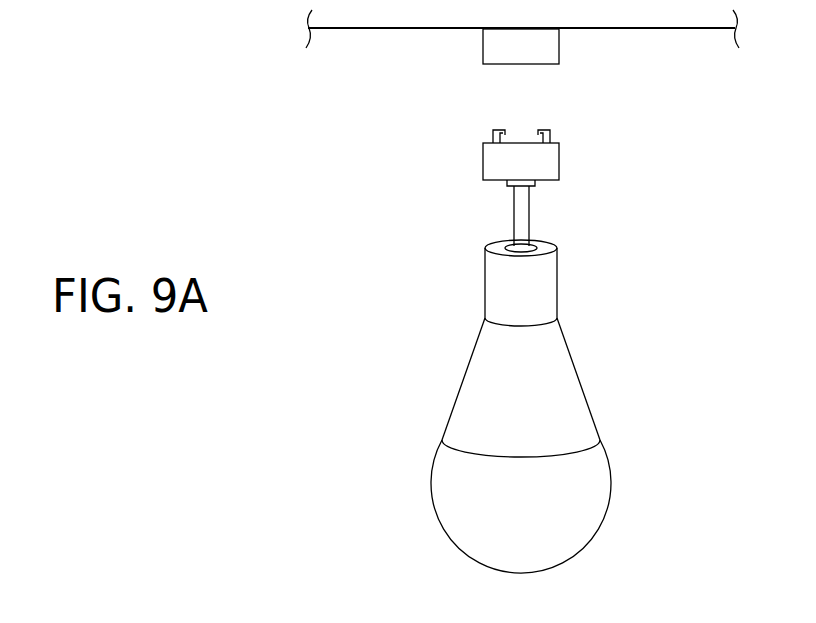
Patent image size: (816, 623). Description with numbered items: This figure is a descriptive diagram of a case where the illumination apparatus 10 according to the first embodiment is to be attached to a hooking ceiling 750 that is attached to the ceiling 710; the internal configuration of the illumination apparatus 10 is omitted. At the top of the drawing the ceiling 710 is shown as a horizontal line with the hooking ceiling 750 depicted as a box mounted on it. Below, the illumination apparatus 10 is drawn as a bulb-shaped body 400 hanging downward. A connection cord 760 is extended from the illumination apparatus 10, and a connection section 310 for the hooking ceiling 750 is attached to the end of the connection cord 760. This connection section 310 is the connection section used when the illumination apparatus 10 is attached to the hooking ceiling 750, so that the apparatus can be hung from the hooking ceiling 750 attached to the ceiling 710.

The illumination apparatus 10 is at (634, 465).
The connection section 310 is at (559, 160).
The lamp 400 is at (439, 521).
The ceiling 710 is at (419, 30).
The hooking ceiling 750 is at (559, 47).
The connection cord 760 is at (514, 218).